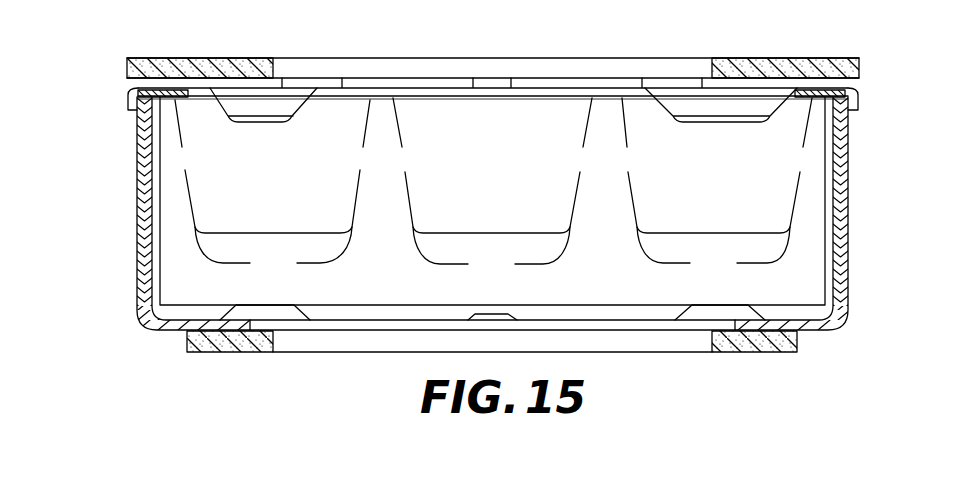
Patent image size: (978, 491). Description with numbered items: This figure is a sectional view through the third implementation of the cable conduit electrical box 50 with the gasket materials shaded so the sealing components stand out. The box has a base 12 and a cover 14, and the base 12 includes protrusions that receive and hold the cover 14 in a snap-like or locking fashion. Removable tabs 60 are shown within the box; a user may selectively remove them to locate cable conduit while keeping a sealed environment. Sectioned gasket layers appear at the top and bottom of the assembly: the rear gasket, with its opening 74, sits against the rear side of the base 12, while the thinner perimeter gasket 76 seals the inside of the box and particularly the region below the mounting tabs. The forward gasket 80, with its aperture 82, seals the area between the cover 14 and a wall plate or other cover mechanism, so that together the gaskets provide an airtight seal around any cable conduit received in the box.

The cable conduit electrical box 50 is at (118, 37).
The opening 74 is at (273, 68).
The perimeter gasket 76 is at (842, 55).
The base 12 is at (859, 99).
The cover 14 is at (137, 216).
The removable tabs 60 is at (226, 207).
The aperture 82 is at (290, 352).
The forward gasket 80 is at (803, 345).